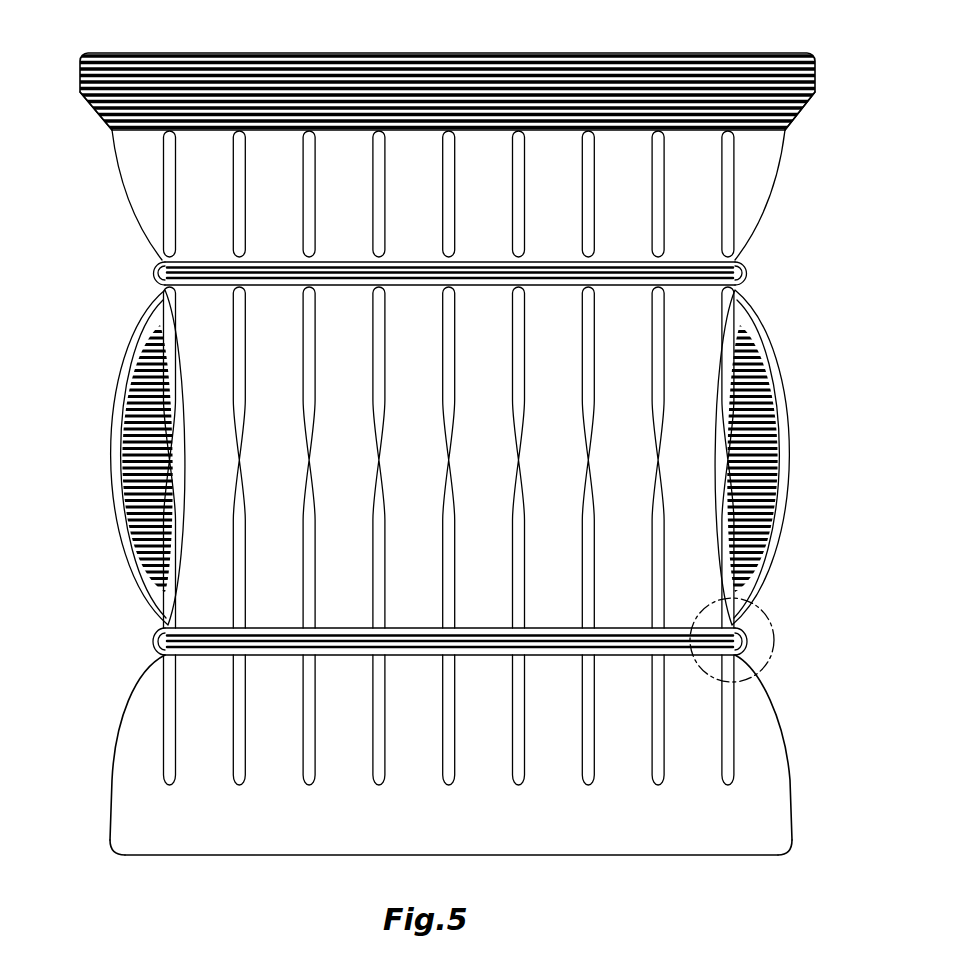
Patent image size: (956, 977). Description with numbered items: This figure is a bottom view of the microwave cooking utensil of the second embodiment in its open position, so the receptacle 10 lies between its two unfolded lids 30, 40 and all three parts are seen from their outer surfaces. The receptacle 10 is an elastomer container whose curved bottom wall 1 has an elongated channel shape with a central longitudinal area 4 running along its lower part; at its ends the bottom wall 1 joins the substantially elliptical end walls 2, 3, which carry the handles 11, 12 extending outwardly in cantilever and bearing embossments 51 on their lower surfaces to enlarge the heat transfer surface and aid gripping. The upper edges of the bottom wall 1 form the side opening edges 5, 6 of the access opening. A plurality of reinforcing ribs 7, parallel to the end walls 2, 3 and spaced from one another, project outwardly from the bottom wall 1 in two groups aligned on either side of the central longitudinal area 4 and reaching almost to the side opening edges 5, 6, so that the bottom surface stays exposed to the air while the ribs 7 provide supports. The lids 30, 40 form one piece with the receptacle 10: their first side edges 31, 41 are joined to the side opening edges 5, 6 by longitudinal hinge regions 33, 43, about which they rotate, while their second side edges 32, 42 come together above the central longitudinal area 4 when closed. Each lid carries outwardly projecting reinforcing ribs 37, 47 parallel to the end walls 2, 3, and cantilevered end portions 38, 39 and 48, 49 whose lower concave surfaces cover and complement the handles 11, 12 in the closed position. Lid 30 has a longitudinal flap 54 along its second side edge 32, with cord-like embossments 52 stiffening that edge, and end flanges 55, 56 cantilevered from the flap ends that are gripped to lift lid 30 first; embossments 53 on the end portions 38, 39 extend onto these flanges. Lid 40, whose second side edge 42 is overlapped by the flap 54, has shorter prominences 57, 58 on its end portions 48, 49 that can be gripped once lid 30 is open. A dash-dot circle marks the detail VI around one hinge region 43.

The bottom wall 1 is at (737, 457).
The end wall 2 is at (170, 513).
The end wall 3 is at (770, 515).
The central longitudinal area 4 is at (449, 457).
The side opening edge 5 is at (449, 457).
The side opening edge 6 is at (499, 645).
The reinforcing ribs 7 is at (583, 333).
The receptacle 10 is at (117, 457).
The handle 11 is at (110, 452).
The handle 12 is at (790, 427).
The lid 30 is at (439, 195).
The first side edge 31 is at (496, 240).
The second side edge 32 is at (449, 194).
The hinge region 33 is at (752, 264).
The reinforcing ribs 37 is at (662, 217).
The end portion 38 is at (125, 163).
The end portion 39 is at (763, 180).
The lid 40 is at (448, 783).
The first side edge 41 is at (499, 679).
The second side edge 42 is at (352, 857).
The hinge region 43 is at (755, 641).
The reinforcing ribs 47 is at (595, 742).
The end portion 48 is at (122, 783).
The end portion 49 is at (772, 762).
The embossments 51 is at (447, 457).
The embossments 52 is at (438, 68).
The embossments 53 is at (118, 72).
The longitudinal flap 54 is at (438, 68).
The end flange 55 is at (88, 93).
The end flange 56 is at (807, 97).
The prominence 57 is at (108, 845).
The prominence 58 is at (800, 838).
The detail view VI is at (782, 618).